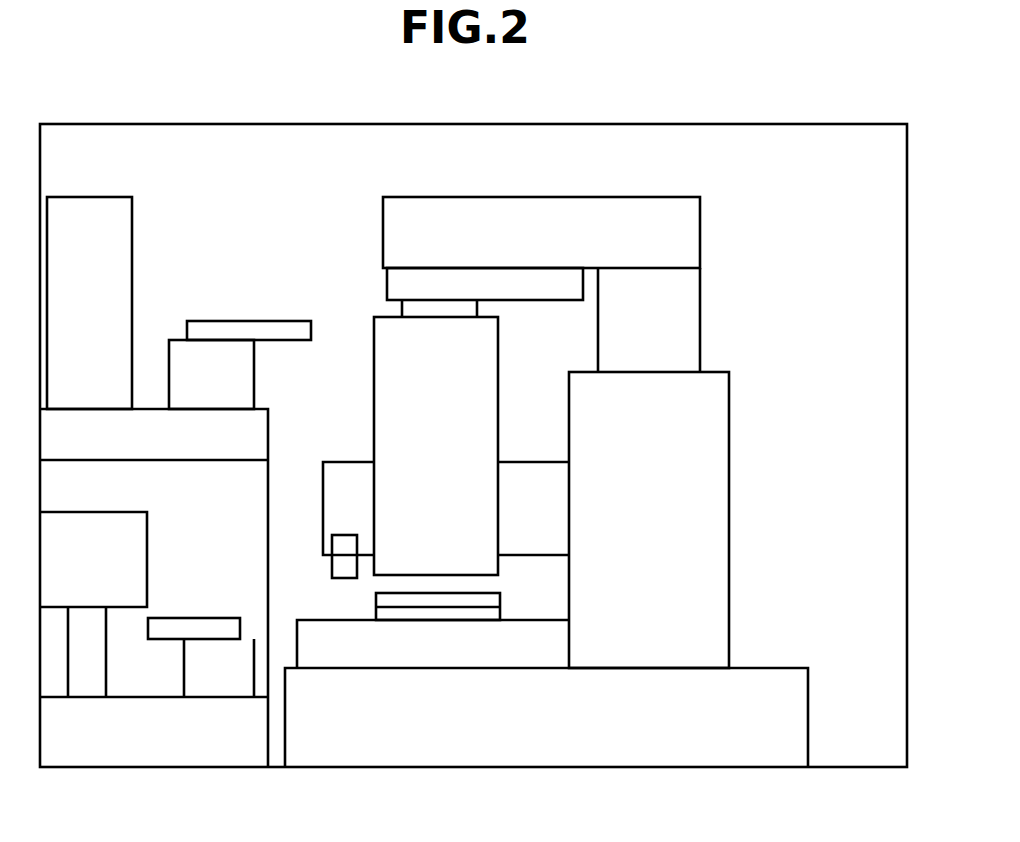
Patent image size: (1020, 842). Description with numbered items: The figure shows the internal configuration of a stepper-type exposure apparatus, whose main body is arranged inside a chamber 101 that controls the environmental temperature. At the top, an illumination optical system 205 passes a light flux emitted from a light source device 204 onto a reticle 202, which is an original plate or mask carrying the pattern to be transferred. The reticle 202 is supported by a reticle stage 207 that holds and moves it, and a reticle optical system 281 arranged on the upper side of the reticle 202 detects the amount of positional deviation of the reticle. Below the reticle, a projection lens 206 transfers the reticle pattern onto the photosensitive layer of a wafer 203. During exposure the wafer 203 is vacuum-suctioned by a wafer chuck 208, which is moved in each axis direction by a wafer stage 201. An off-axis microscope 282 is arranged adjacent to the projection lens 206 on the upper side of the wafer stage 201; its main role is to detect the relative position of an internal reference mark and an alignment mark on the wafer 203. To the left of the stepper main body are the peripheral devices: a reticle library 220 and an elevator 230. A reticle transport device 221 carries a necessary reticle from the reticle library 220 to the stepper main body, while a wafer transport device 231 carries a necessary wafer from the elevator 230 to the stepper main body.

The chamber 101 is at (751, 124).
The wafer stage 201 is at (520, 650).
The reticle 202 is at (400, 308).
The wafer 203 is at (490, 602).
The light source device 204 is at (710, 445).
The illumination optical system 205 is at (400, 224).
The projection lens 206 is at (398, 400).
The reticle stage 207 is at (534, 288).
The wafer chuck 208 is at (400, 614).
The reticle library 220 is at (91, 213).
The reticle transport device 221 is at (211, 330).
The elevator 230 is at (88, 680).
The wafer transport device 231 is at (200, 628).
The reticle optical system 281 is at (398, 282).
The off-axis microscope 282 is at (350, 545).